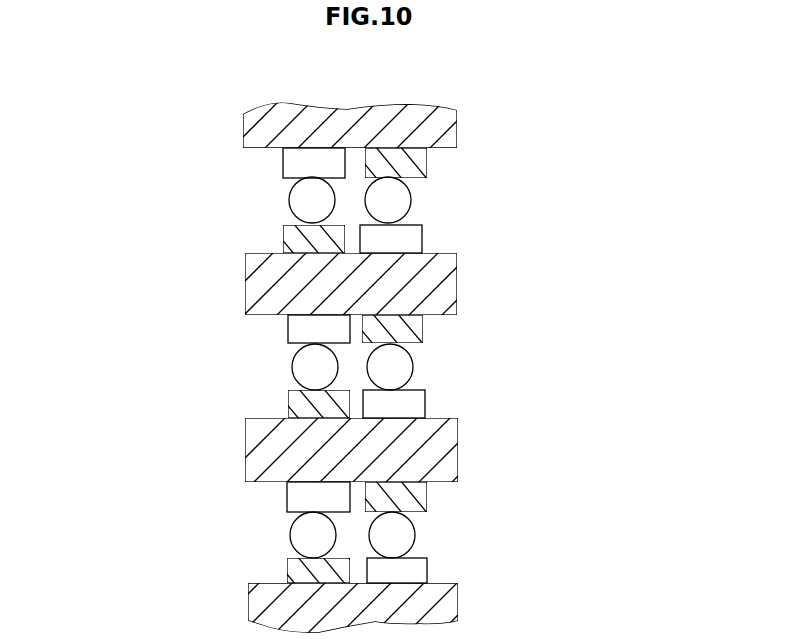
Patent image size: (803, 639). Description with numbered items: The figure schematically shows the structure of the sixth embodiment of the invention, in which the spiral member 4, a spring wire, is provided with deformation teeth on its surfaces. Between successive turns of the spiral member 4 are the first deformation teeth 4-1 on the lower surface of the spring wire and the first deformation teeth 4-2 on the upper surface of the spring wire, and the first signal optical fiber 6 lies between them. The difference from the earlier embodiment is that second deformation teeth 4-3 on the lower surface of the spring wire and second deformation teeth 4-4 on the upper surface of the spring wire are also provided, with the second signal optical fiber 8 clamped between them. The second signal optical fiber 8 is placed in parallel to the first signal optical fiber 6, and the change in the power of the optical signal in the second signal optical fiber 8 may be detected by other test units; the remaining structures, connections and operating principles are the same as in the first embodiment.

The spiral member 4 is at (247, 293).
The first deformation teeth on the lower surface of the spring wire 4-1 is at (293, 168).
The first deformation teeth on the upper surface of the spring wire 4-2 is at (300, 243).
The second deformation teeth on the lower surface of the spring wire 4-3 is at (417, 503).
The second deformation teeth on the upper surface of the spring wire 4-4 is at (415, 405).
The first signal optical fiber 6 is at (300, 372).
The second signal optical fiber 8 is at (400, 372).